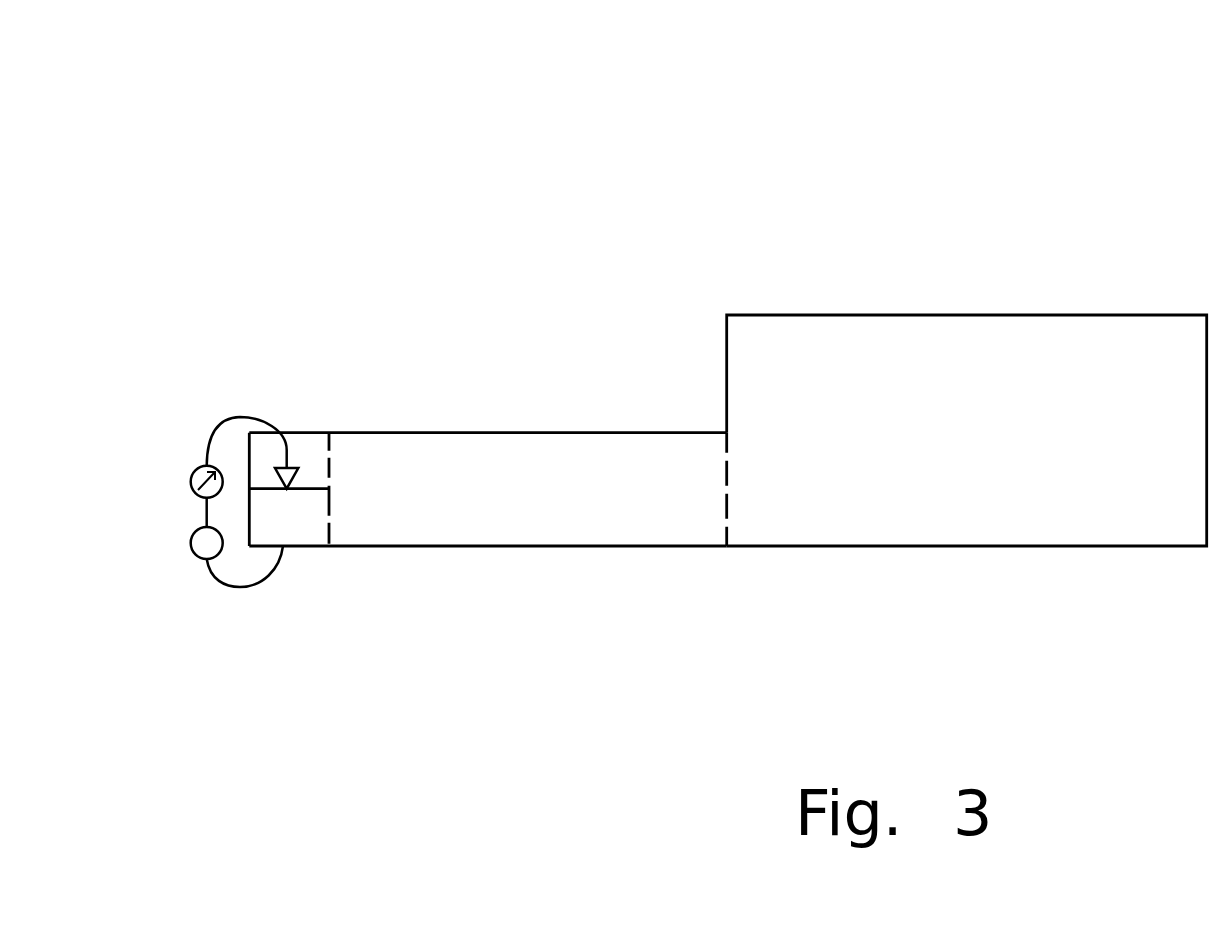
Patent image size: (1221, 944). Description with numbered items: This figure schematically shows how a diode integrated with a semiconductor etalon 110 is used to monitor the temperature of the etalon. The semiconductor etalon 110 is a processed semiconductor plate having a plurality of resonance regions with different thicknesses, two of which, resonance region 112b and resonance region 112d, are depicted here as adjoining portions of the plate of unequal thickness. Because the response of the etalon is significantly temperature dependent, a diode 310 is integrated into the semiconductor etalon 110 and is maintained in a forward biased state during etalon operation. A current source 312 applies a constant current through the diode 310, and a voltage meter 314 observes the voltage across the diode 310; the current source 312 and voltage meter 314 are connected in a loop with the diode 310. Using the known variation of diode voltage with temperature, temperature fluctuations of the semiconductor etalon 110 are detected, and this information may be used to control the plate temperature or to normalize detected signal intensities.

The semiconductor etalon 110 is at (1028, 210).
The resonance region 112b is at (466, 432).
The resonance region 112d is at (867, 315).
The diode 310 is at (300, 432).
The current source 312 is at (191, 476).
The voltage meter 314 is at (194, 555).